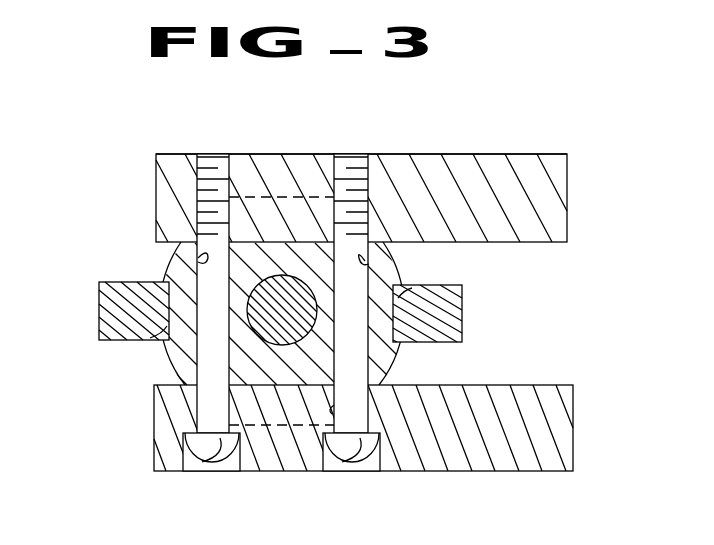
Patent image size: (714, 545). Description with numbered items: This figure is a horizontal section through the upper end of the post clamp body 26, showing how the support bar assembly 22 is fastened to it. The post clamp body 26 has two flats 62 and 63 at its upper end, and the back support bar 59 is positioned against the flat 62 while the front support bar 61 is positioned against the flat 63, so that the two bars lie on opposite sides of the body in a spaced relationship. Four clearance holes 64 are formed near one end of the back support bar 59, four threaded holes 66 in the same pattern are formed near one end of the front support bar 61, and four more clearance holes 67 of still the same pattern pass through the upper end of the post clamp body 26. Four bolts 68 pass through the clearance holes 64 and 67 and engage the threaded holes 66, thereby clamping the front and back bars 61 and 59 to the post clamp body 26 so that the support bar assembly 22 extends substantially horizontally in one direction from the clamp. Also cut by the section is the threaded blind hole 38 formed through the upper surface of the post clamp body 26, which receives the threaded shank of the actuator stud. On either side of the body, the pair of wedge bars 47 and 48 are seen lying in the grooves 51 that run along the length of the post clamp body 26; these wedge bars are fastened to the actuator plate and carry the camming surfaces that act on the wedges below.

The support bar assembly 22 is at (536, 153).
The post clamp body 26 is at (392, 365).
The threaded blind hole 38 is at (285, 342).
The wedge bar 47 is at (462, 310).
The wedge bar 48 is at (97, 310).
The grooves 51 is at (150, 338).
The back support bar 59 is at (573, 428).
The front support bar 61 is at (569, 197).
The flat 62 is at (317, 387).
The flat 63 is at (247, 240).
The clearance holes 64 is at (334, 412).
The threaded holes 66 is at (337, 170).
The clearance holes 67 is at (198, 258).
The bolts 68 is at (203, 463).